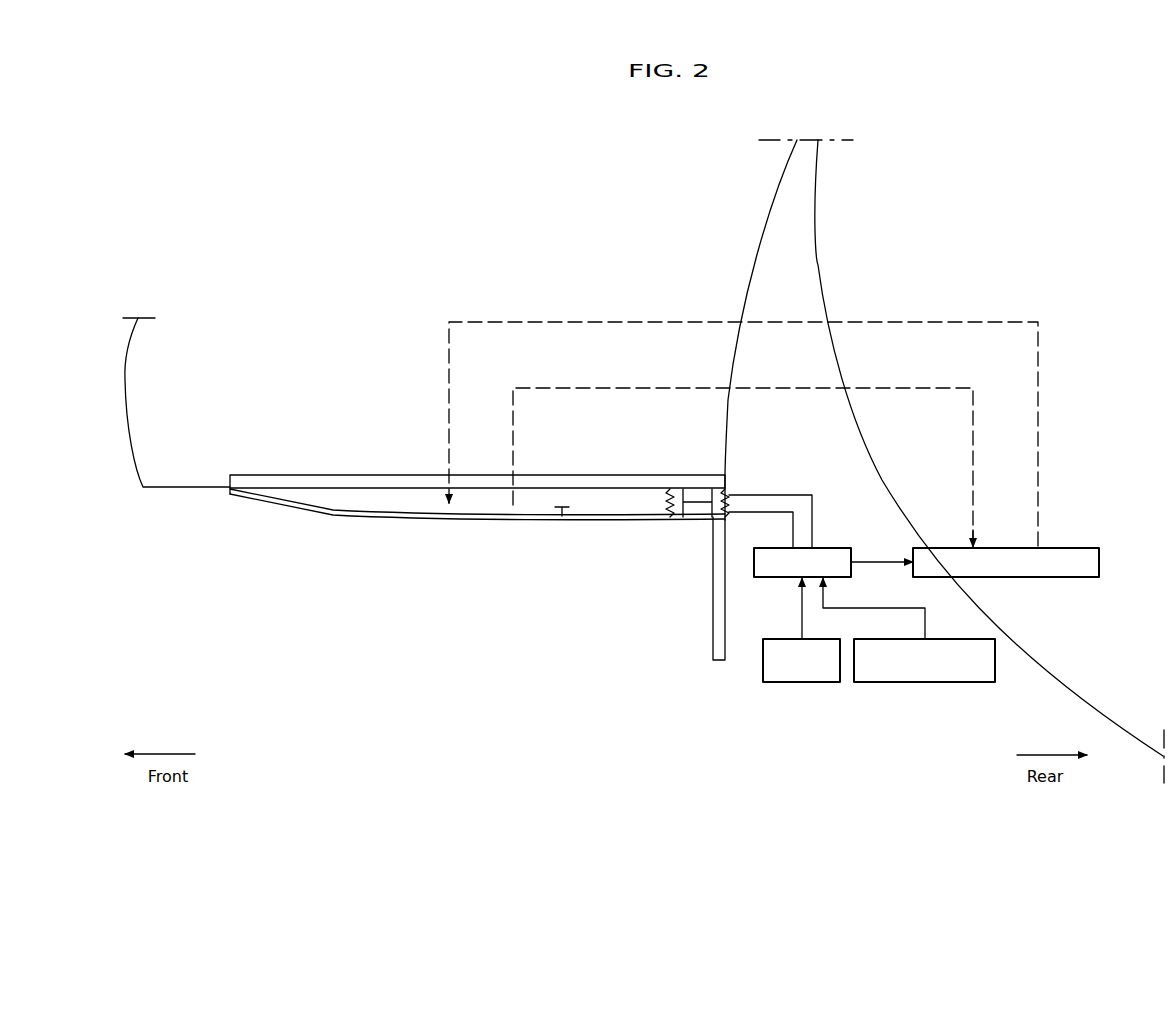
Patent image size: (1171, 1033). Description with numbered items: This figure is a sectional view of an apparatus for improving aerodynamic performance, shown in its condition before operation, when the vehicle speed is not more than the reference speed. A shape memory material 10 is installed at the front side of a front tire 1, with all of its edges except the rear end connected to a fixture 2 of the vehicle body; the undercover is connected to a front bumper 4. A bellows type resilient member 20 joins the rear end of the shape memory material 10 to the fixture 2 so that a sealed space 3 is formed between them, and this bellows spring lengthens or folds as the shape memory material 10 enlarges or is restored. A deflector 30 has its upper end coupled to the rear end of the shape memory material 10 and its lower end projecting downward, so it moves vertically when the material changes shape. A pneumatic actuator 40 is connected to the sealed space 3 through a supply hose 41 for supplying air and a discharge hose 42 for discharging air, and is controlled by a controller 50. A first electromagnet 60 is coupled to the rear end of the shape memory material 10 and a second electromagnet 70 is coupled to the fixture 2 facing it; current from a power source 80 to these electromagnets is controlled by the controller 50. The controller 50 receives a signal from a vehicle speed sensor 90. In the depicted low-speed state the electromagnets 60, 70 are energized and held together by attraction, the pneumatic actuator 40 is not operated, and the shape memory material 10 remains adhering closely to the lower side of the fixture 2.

The front tire 1 is at (818, 264).
The fixture of the vehicle body 2 is at (315, 475).
The sealed space 3 is at (562, 516).
The front bumper 4 is at (143, 488).
The shape memory material 10 is at (372, 518).
The bellows type resilient member 20 is at (667, 510).
The deflector 30 is at (712, 656).
The pneumatic actuator 40 is at (1023, 578).
The supply hose 41 is at (516, 322).
The discharge hose 42 is at (622, 388).
The controller 50 is at (828, 548).
The first electromagnet 60 is at (692, 519).
The second electromagnet 70 is at (696, 490).
The power source 80 is at (800, 683).
The vehicle speed sensor 90 is at (930, 683).